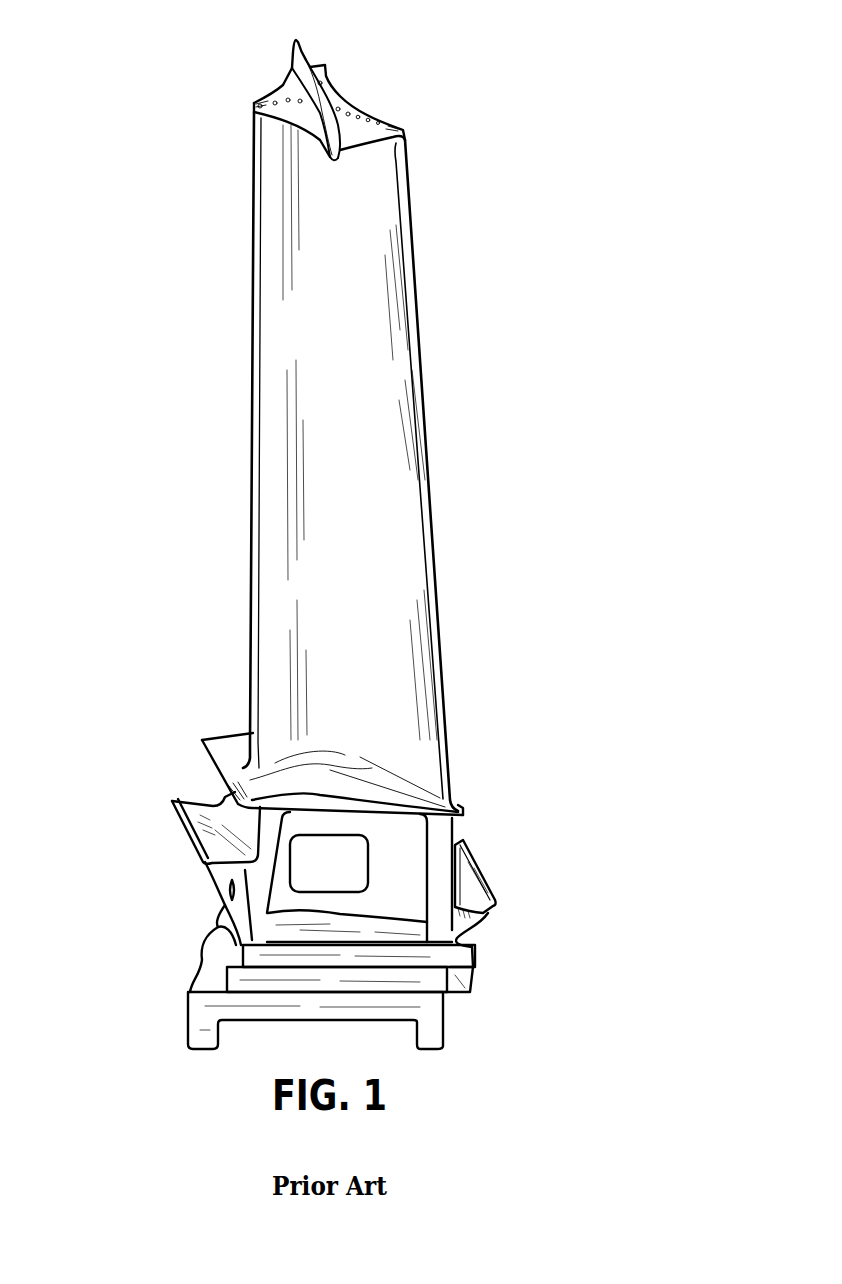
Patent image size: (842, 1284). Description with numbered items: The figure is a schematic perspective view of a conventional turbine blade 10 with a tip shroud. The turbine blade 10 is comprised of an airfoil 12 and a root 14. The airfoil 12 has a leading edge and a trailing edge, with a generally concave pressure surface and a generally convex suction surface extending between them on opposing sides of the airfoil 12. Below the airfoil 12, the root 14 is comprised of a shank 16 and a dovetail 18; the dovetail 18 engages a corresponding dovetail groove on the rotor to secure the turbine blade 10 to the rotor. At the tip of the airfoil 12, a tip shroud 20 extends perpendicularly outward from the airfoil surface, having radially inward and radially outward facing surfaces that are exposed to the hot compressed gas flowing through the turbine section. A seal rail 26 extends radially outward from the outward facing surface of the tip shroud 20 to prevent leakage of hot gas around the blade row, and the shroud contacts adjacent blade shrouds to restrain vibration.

The turbine blade 10 is at (363, 529).
The airfoil 12 is at (453, 596).
The root 14 is at (510, 863).
The shank 16 is at (172, 892).
The dovetail 18 is at (172, 1016).
The tip shroud 20 is at (387, 85).
The seal rail 26 is at (327, 85).